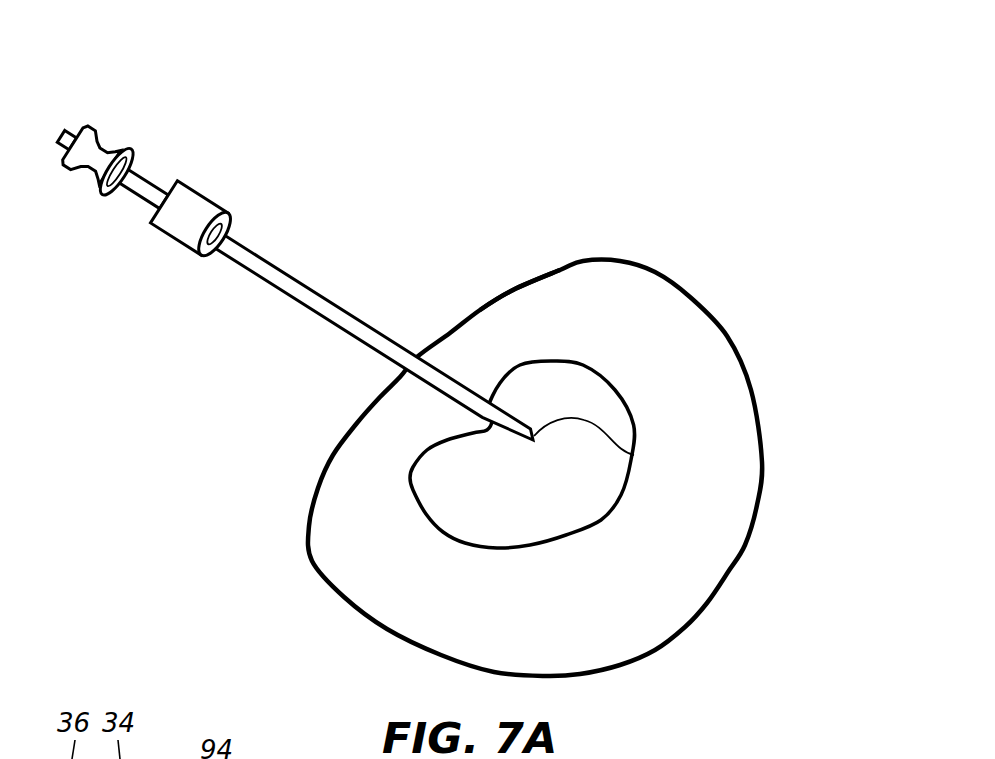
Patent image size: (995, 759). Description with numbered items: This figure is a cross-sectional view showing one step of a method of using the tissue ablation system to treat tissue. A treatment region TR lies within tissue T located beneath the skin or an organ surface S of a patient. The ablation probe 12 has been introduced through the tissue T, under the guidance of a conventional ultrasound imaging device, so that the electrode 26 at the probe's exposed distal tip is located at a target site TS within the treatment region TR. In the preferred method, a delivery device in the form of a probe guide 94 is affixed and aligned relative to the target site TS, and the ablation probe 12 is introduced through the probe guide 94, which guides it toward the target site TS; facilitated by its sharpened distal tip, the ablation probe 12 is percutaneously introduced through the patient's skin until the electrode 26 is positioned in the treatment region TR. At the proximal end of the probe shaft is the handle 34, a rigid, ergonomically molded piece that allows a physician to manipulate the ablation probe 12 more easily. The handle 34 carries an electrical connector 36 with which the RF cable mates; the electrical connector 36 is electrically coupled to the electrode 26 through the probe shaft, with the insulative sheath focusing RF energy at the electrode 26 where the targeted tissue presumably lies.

The ablation probe 12 is at (236, 286).
The RF ablation electrode 26 is at (518, 442).
The handle 34 is at (103, 135).
The electrical connector 36 is at (64, 130).
The probe guide 94 is at (204, 194).
The skin or organ surface S is at (505, 294).
The tissue T is at (680, 317).
The treatment region TR is at (566, 359).
The target site TS is at (634, 455).